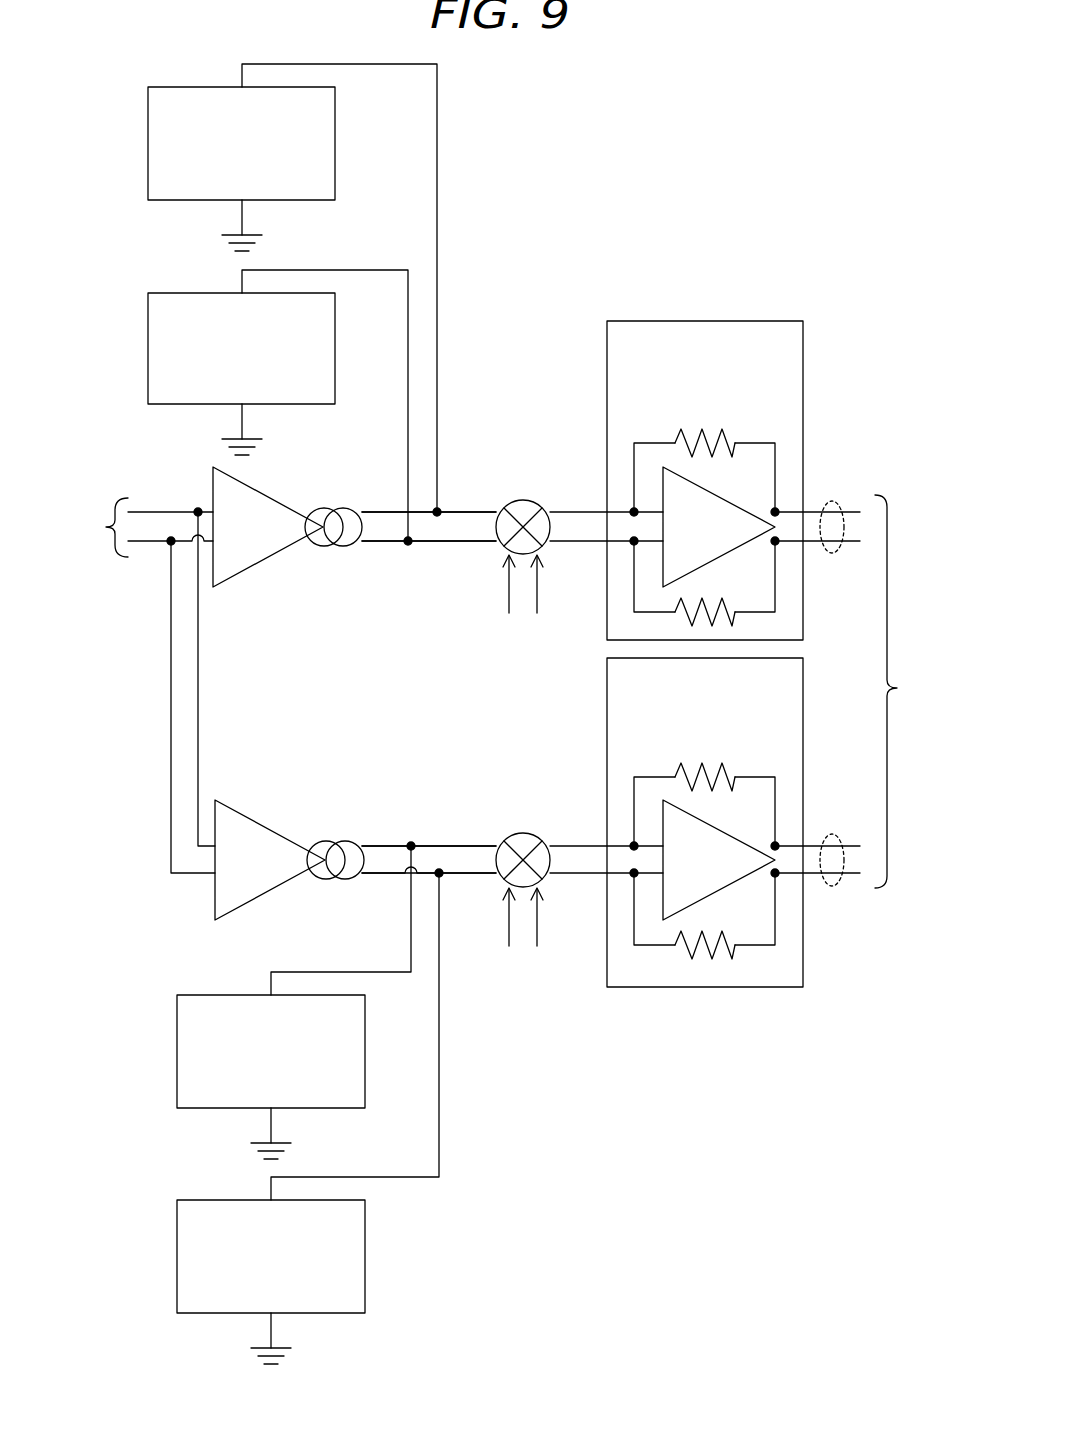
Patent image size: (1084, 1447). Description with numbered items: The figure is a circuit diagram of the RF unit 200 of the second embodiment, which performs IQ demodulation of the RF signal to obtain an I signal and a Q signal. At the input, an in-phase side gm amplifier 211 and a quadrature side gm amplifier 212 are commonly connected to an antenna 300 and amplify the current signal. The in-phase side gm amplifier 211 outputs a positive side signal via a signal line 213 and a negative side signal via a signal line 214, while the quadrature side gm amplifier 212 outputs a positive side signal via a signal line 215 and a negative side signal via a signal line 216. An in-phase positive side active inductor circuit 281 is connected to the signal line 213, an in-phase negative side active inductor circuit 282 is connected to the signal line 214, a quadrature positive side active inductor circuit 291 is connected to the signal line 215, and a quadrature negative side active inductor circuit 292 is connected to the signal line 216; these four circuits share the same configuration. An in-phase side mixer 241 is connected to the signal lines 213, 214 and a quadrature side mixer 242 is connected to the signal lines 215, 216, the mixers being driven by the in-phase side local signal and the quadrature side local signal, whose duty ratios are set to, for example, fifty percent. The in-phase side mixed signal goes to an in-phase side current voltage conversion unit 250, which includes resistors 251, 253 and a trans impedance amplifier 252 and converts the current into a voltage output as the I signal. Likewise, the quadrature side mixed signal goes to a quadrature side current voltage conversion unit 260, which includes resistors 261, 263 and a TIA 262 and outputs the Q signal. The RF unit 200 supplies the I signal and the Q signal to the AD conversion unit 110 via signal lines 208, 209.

The RF unit 200 is at (516, 141).
The in-phase positive side active inductor circuit 281 is at (335, 108).
The in-phase negative side active inductor circuit 282 is at (335, 315).
The quadrature positive side active inductor circuit 291 is at (365, 1016).
The quadrature negative side active inductor circuit 292 is at (365, 1222).
The in-phase side gm amplifier 211 is at (272, 493).
The quadrature side gm amplifier 212 is at (275, 824).
The signal line 213 is at (378, 511).
The signal line 214 is at (382, 543).
The signal line 215 is at (380, 845).
The signal line 216 is at (382, 875).
The in-phase side mixer 241 is at (533, 501).
The quadrature side mixer 242 is at (533, 834).
The in-phase side current voltage conversion unit 250 is at (727, 473).
The resistor 251 is at (732, 437).
The trans impedance amplifier (TIA) 252 is at (718, 492).
The resistor 253 is at (732, 597).
The quadrature side current voltage conversion unit 260 is at (727, 816).
The resistor 261 is at (734, 773).
The TIA 262 is at (718, 825).
The resistor 263 is at (732, 930).
The signal line 208 is at (832, 500).
The signal line 209 is at (832, 835).
The antenna 300 is at (87, 527).
The AD conversion unit 110 is at (915, 691).